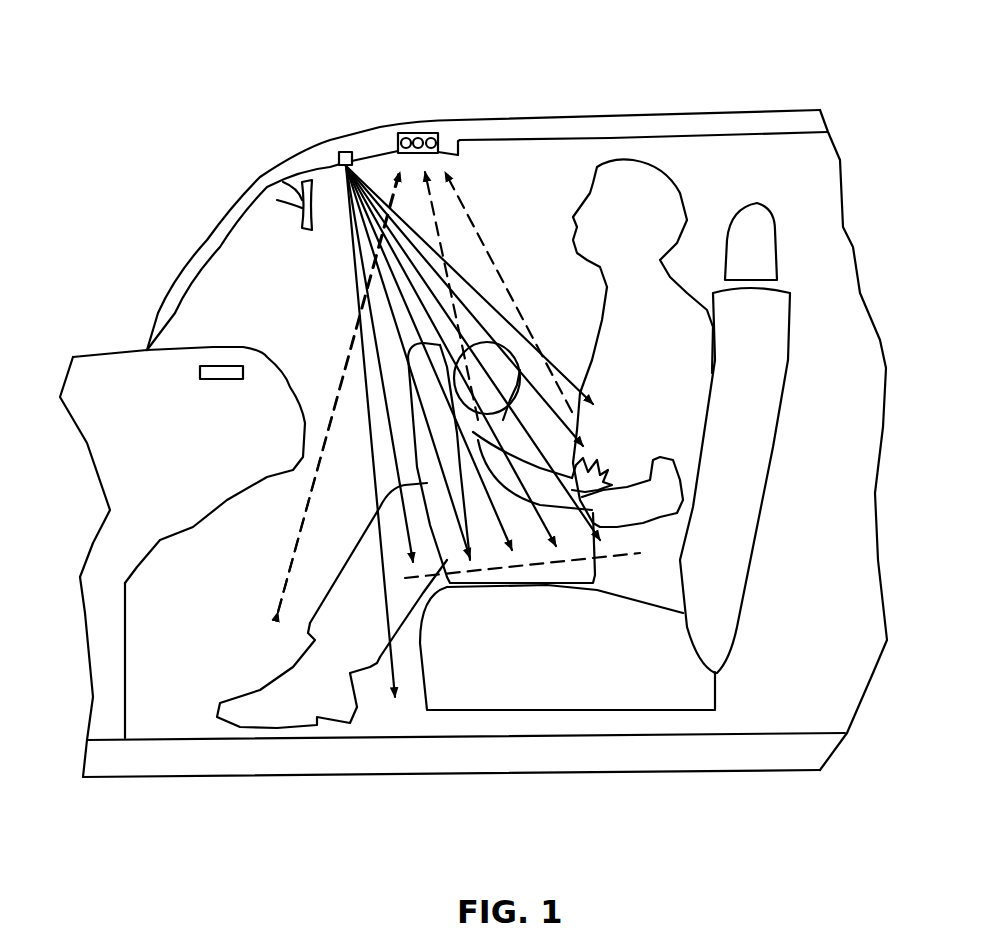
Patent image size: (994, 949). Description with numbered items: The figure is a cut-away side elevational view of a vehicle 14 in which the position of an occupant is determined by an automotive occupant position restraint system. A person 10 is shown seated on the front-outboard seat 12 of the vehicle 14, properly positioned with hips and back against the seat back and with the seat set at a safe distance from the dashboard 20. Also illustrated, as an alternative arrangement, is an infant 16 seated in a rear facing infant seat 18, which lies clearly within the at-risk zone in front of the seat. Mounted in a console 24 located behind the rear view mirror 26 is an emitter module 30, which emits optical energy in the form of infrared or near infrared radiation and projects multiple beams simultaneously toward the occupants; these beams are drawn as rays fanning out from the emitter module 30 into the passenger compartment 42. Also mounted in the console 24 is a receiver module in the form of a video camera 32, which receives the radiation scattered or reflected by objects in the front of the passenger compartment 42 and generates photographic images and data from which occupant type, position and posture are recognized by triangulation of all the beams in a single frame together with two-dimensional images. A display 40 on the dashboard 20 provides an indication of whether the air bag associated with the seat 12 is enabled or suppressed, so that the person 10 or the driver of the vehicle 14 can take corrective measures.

The person 10 is at (680, 403).
The front-outboard seat 12 is at (737, 557).
The vehicle 14 is at (220, 240).
The infant 16 is at (490, 348).
The rear facing infant seat 18 is at (433, 468).
The dashboard 20 is at (180, 360).
The console 24 is at (372, 143).
The rear view mirror 26 is at (267, 200).
The emitter module 30 is at (347, 153).
The video camera 32 is at (412, 130).
The display 40 is at (233, 365).
The passenger compartment 42 is at (557, 160).